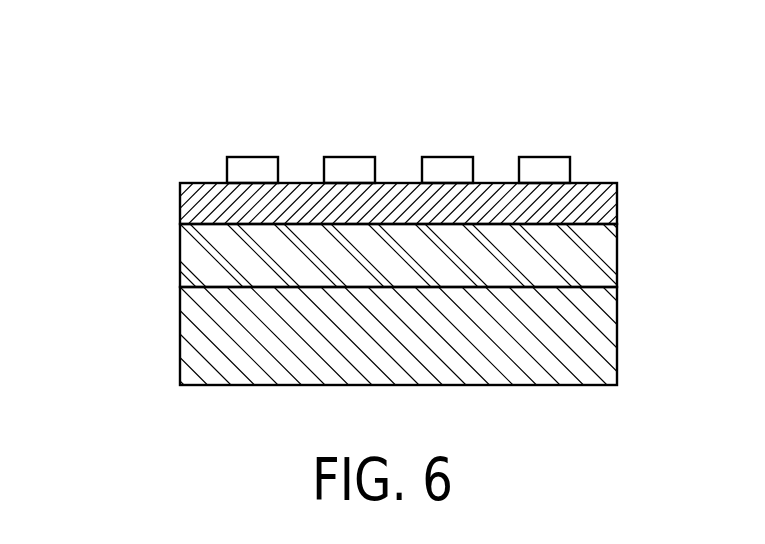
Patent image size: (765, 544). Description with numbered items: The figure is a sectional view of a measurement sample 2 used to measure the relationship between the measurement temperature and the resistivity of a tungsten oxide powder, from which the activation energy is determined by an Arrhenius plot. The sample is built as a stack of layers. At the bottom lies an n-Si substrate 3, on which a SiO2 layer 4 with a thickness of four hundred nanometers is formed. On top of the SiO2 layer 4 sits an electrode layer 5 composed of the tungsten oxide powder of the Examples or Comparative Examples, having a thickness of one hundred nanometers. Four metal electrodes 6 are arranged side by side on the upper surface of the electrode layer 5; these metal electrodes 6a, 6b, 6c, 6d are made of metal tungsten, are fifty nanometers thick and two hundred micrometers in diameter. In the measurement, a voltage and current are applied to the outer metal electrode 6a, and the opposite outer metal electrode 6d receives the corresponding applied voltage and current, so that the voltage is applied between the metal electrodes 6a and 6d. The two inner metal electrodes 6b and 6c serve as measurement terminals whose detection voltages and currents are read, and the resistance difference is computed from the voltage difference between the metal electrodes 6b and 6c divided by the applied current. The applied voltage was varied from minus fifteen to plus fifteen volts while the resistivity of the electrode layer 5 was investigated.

The measurement sample 2 is at (117, 184).
The n-Si substrate 3 is at (603, 333).
The SiO2 layer 4 is at (603, 255).
The electrode layer 5 is at (603, 202).
The metal electrodes 6 is at (235, 75).
The metal electrode 6a is at (255, 157).
The metal electrode 6b is at (352, 157).
The metal electrode 6c is at (449, 157).
The metal electrode 6d is at (548, 157).